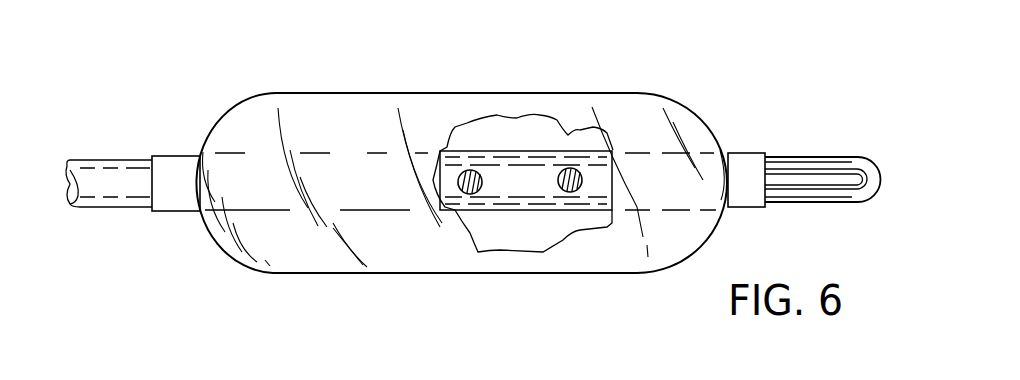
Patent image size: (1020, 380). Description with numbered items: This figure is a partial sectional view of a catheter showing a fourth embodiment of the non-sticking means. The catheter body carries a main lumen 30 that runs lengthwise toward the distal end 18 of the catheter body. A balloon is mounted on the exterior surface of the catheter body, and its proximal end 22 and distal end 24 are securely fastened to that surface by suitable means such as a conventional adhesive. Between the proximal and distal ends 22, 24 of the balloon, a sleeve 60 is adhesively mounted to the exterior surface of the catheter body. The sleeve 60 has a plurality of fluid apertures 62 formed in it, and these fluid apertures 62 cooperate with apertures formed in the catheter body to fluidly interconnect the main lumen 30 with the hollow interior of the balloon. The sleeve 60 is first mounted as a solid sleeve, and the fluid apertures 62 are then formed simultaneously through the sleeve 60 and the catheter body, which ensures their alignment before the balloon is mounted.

The distal end 18 is at (860, 157).
The proximal end of the balloon 22 is at (172, 153).
The distal end of the balloon 24 is at (748, 152).
The main lumen 30 is at (115, 213).
The sleeve 60 is at (528, 151).
The fluid apertures 62 is at (570, 183).